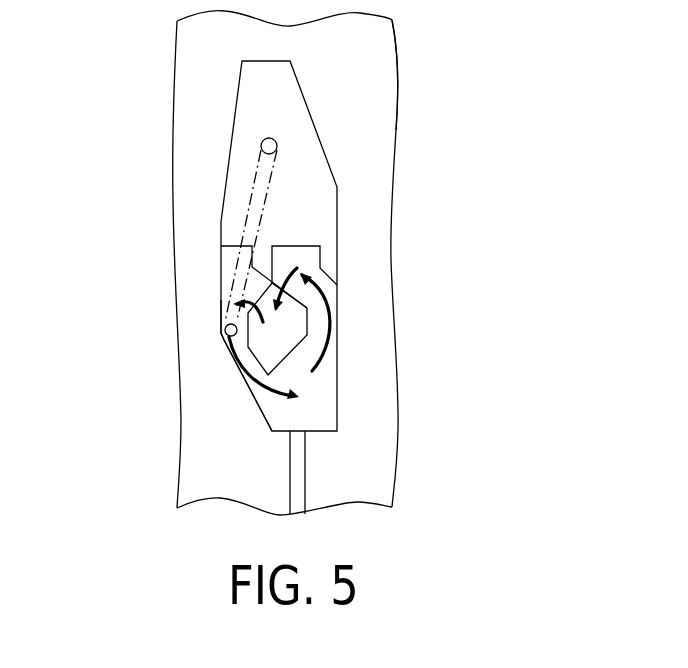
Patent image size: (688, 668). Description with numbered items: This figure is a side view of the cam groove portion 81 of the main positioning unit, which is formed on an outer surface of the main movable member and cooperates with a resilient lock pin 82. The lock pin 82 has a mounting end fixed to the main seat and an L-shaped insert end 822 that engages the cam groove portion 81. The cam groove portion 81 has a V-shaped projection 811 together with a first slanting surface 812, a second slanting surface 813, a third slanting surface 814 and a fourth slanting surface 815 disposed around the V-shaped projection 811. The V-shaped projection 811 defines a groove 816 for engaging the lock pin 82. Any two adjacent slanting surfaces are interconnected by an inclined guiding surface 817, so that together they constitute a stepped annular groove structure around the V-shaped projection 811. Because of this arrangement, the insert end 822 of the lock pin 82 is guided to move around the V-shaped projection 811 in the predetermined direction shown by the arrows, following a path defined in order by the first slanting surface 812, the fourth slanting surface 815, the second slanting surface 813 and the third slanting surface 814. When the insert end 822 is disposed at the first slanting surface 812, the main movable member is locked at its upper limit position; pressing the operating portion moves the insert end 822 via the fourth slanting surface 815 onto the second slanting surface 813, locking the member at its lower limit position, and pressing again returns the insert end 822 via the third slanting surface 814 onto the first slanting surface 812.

The cam groove portion 81 is at (312, 118).
The V-shaped projection 811 is at (277, 347).
The first slanting surface 812 is at (313, 411).
The second slanting surface 813 is at (228, 323).
The third slanting surface 814 is at (228, 263).
The fourth slanting surface 815 is at (303, 258).
The groove 816 is at (248, 348).
The inclined guiding surface 817 is at (253, 300).
The resilient lock pin 82 is at (252, 184).
The L-shaped insert end 822 is at (228, 326).